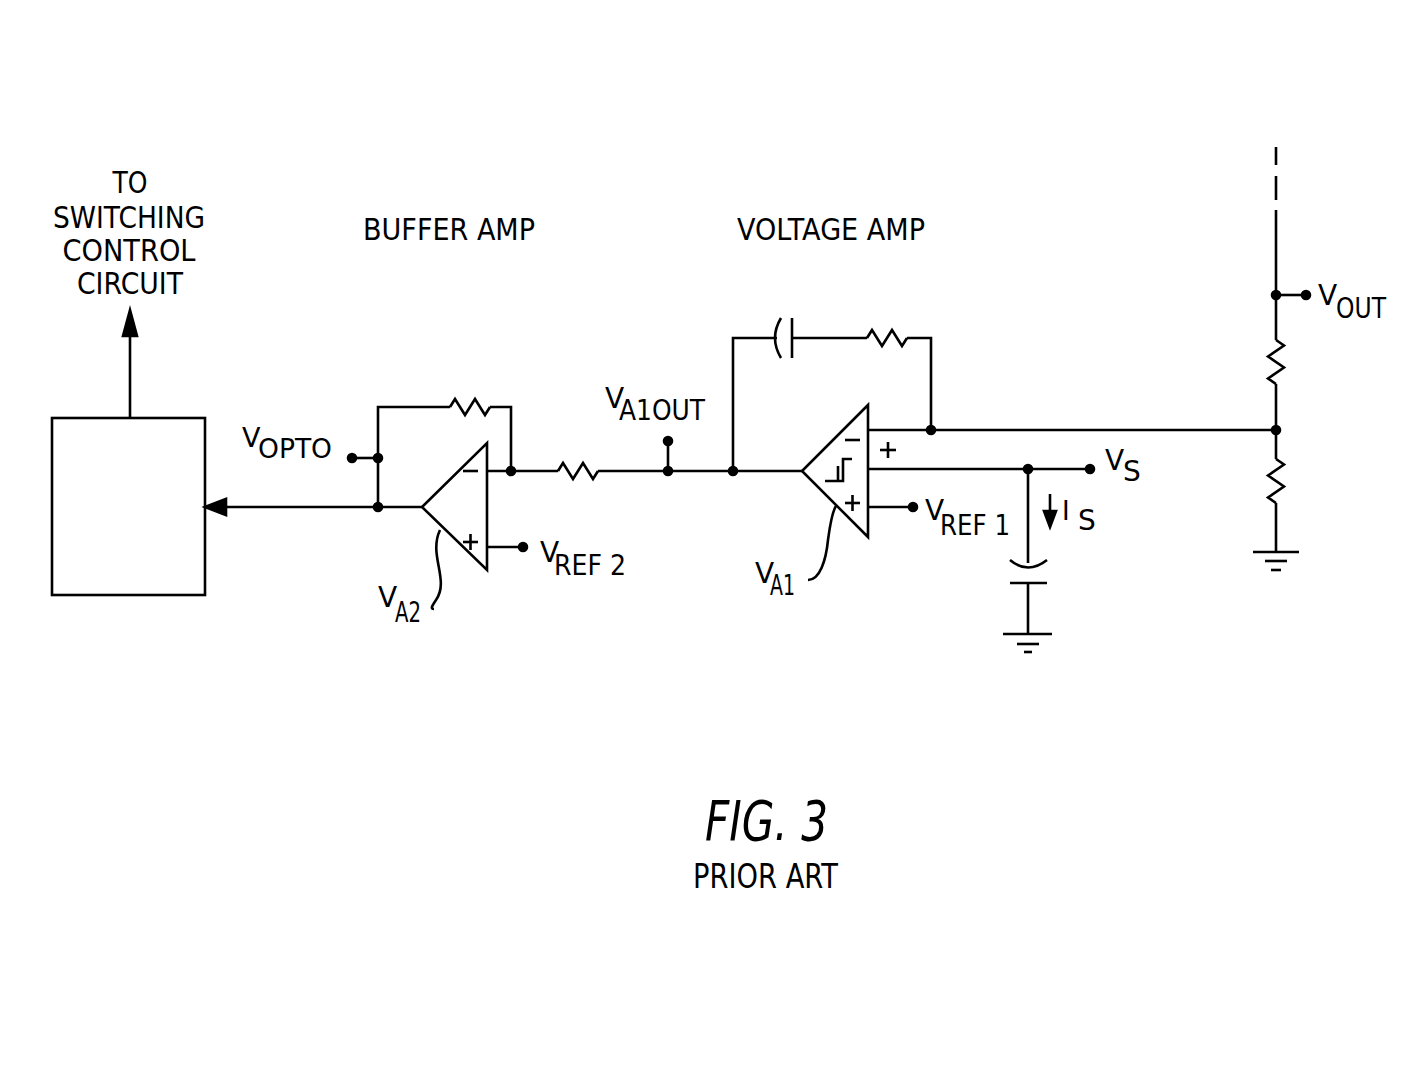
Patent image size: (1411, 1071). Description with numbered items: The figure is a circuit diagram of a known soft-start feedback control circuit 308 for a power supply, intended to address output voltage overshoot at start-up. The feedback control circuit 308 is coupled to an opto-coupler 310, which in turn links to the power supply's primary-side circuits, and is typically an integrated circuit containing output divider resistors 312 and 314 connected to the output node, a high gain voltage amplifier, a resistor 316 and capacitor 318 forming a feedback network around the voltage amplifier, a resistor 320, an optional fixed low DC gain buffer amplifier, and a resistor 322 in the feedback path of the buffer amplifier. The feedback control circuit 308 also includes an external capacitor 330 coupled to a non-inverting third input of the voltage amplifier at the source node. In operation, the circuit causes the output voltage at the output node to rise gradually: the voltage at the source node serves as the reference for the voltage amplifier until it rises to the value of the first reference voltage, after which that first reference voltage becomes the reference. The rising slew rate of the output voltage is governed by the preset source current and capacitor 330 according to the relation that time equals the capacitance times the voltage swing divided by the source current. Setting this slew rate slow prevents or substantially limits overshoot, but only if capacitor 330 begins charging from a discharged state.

The soft-start feedback control circuit 308 is at (1040, 182).
The opto-coupler 310 is at (127, 596).
The output divider resistor 312 is at (1285, 372).
The output divider resistor 314 is at (1285, 493).
The resistor 316 is at (899, 335).
The capacitor 318 is at (796, 348).
The resistor 320 is at (598, 478).
The resistor 322 is at (471, 400).
The external capacitor 330 is at (1035, 585).